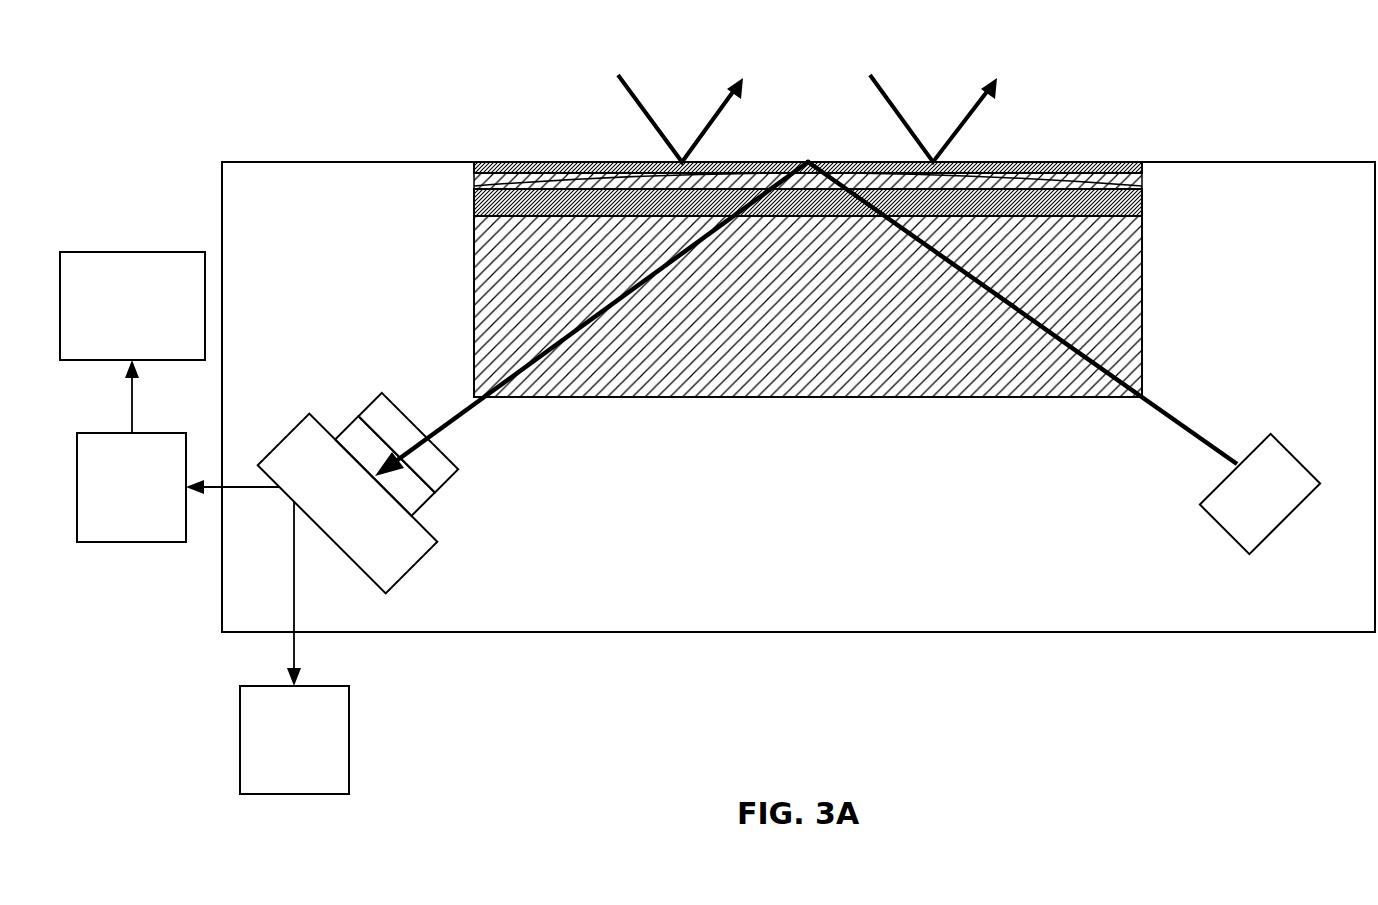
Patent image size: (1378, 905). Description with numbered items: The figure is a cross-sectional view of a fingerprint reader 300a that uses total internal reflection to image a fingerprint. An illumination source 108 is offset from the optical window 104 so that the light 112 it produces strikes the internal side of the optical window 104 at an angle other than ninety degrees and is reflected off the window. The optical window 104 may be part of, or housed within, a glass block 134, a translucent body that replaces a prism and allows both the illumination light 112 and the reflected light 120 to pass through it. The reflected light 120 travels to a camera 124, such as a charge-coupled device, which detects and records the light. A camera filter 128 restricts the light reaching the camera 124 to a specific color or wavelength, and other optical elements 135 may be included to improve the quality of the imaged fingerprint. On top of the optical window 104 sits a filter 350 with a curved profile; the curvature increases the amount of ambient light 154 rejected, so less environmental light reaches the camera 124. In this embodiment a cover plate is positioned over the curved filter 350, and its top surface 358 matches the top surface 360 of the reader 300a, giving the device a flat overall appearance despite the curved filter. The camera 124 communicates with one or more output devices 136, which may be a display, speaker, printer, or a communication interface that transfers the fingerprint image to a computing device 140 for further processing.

The reader 300a is at (365, 135).
The top surface of the reader 360 is at (1250, 162).
The filter 350 is at (1143, 180).
The optical window 104 is at (1143, 207).
The glass block 134 is at (1143, 272).
The ambient light 154 is at (637, 110).
The top surface of the cover plate 358 is at (810, 160).
The reflected light 120 is at (466, 410).
The light 112 is at (1181, 427).
The illumination source 108 is at (1260, 494).
The camera 124 is at (348, 504).
The other optical elements 135 is at (340, 433).
The camera filter 128 is at (453, 475).
The output device 136 is at (213, 613).
The computing device 140 is at (132, 306).